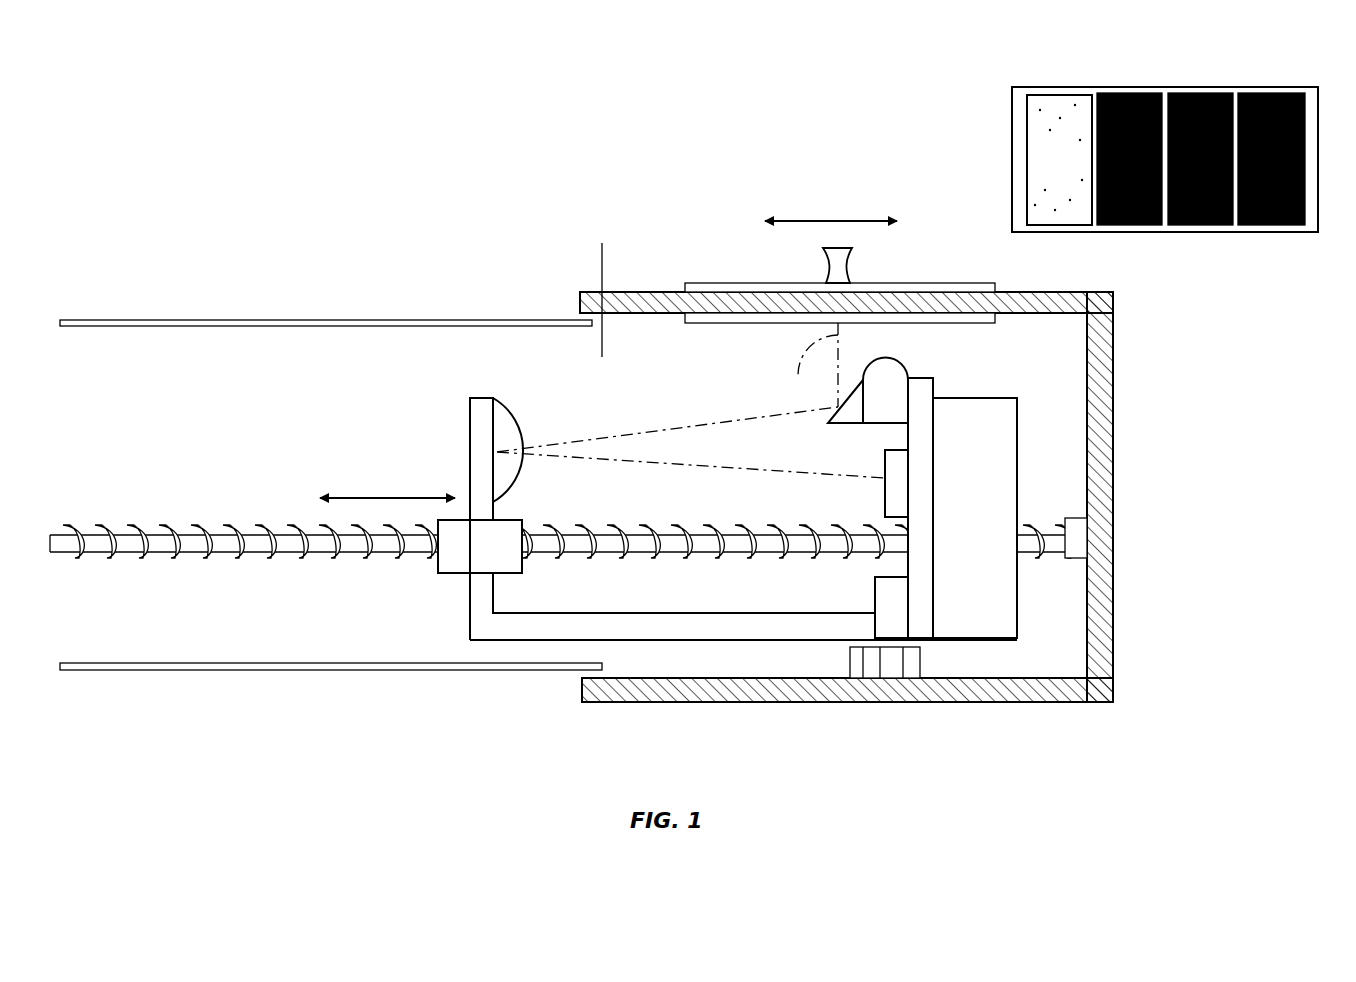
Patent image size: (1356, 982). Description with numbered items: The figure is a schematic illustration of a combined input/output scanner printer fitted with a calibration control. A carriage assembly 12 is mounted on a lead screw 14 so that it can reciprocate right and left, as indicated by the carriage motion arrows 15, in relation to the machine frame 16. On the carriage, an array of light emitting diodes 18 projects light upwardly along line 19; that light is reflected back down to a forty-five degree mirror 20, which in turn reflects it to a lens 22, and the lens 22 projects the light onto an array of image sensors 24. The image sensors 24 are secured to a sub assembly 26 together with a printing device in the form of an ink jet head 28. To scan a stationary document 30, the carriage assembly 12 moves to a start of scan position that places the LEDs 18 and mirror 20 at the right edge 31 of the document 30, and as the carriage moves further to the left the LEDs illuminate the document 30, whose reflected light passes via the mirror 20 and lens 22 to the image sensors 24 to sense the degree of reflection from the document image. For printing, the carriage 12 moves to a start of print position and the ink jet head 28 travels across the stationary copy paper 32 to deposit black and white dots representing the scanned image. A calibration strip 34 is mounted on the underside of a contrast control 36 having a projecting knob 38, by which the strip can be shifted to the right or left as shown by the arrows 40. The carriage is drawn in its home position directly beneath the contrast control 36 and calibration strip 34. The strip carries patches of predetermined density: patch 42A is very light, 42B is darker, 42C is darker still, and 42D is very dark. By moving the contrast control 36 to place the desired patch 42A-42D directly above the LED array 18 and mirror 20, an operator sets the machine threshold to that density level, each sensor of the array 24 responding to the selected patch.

The carriage assembly 12 is at (436, 425).
The lead screw 14 is at (285, 525).
The carriage motion arrows 15 is at (400, 495).
The machine frame 16 is at (745, 700).
The array of light emitting diodes 18 is at (890, 365).
The line 19 is at (691, 400).
The 45 degree mirror 20 is at (850, 427).
The lens 22 is at (518, 420).
The array of image sensors 24 is at (885, 495).
The sub assembly 26 is at (990, 597).
The ink jet head 28 is at (873, 598).
The stationary document 30 is at (285, 318).
The right edge 31 is at (600, 286).
The stationary copy paper 32 is at (285, 662).
The calibration strip 34 is at (985, 158).
The contrast control 36 is at (686, 320).
The projecting knob 38 is at (845, 276).
The arrows 40 is at (830, 218).
The patch 42A is at (1060, 95).
The patch 42B is at (1130, 93).
The patch 42C is at (1197, 93).
The patch 42D is at (1268, 93).